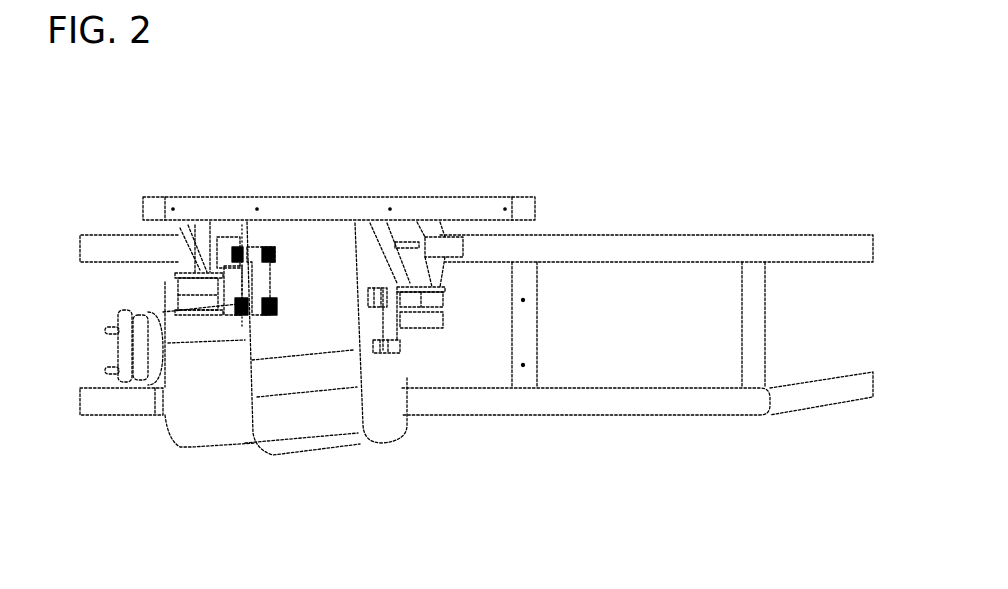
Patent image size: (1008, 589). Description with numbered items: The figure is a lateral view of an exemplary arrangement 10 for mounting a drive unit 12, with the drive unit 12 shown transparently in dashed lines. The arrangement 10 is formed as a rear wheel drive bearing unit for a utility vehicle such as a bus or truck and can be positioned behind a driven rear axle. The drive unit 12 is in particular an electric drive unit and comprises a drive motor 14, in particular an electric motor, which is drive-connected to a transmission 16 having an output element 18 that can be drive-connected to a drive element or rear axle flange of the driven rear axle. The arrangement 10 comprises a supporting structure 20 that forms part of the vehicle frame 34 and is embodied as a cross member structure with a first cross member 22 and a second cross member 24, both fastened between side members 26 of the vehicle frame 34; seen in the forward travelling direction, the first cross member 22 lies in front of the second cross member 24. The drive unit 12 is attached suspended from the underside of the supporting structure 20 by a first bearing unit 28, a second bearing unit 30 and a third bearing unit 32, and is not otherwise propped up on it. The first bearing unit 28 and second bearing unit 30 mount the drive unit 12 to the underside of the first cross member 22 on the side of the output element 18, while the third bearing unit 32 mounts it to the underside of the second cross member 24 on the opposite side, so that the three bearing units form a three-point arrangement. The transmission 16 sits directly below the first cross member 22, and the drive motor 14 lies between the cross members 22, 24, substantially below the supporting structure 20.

The arrangement 10 is at (495, 90).
The drive unit 12 is at (458, 457).
The drive motor 14 is at (303, 428).
The transmission 16 is at (187, 442).
The output element 18 is at (123, 348).
The supporting structure 20 is at (127, 162).
The first cross member 22 is at (183, 230).
The second cross member 24 is at (450, 247).
The side members 26 is at (678, 247).
The first bearing unit 28 is at (270, 252).
The second bearing unit 30 is at (210, 303).
The third bearing unit 32 is at (437, 318).
The vehicle frame 34 is at (733, 206).